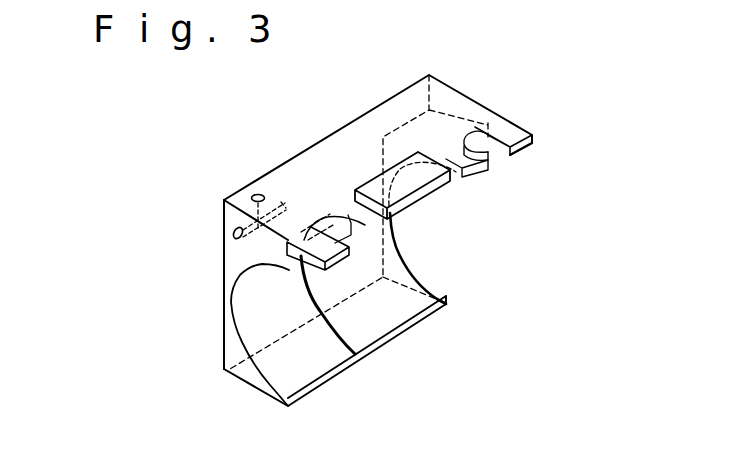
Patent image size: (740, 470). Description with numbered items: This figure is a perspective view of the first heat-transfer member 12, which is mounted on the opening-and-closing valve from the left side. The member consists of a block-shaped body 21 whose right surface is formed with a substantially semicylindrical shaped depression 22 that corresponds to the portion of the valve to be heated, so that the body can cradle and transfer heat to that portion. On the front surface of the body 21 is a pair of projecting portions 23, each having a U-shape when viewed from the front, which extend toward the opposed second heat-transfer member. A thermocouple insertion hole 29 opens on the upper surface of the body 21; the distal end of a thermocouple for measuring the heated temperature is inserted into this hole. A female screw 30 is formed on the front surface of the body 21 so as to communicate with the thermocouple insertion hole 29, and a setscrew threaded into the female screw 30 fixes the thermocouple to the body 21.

The first heat-transfer member 12 is at (355, 116).
The body 21 is at (246, 372).
The semicylindrical shaped depression 22 is at (233, 317).
The projecting portion 23 is at (503, 131).
The thermocouple insertion hole 29 is at (227, 234).
The female screw 30 is at (258, 194).